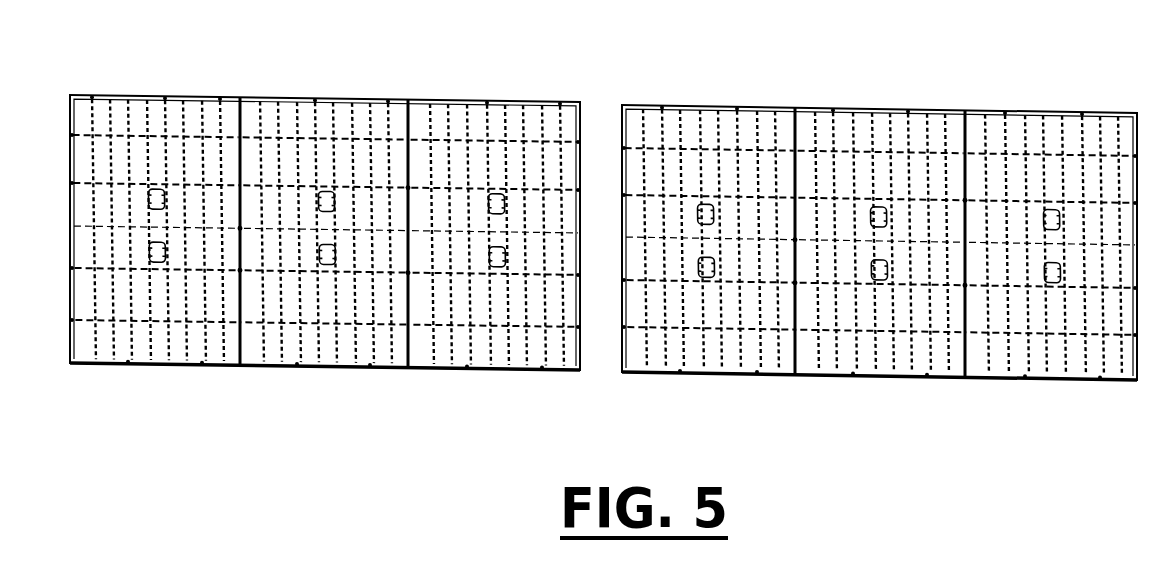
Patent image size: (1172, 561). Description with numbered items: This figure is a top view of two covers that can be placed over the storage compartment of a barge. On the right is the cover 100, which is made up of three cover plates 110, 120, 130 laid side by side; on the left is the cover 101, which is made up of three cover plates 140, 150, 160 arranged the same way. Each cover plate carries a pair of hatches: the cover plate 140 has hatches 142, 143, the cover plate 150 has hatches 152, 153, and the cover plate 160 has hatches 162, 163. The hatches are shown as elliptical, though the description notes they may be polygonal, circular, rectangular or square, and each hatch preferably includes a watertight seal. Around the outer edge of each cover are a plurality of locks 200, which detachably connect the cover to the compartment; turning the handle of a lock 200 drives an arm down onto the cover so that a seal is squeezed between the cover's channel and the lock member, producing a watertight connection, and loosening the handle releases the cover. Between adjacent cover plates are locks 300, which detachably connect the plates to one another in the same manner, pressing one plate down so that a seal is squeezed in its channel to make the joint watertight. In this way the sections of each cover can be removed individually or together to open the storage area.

The cover 100 is at (998, 54).
The cover 101 is at (323, 53).
The cover plate 110 is at (1053, 110).
The cover plate 120 is at (848, 110).
The cover plate 130 is at (697, 108).
The cover plate 140 is at (485, 102).
The cover plate 150 is at (327, 100).
The cover plate 160 is at (148, 97).
The hatch 142 is at (497, 262).
The hatch 143 is at (497, 188).
The hatch 152 is at (325, 262).
The hatch 153 is at (325, 188).
The hatch 162 is at (152, 262).
The hatch 163 is at (157, 188).
The lock 200 is at (97, 96).
The lock 300 is at (240, 297).